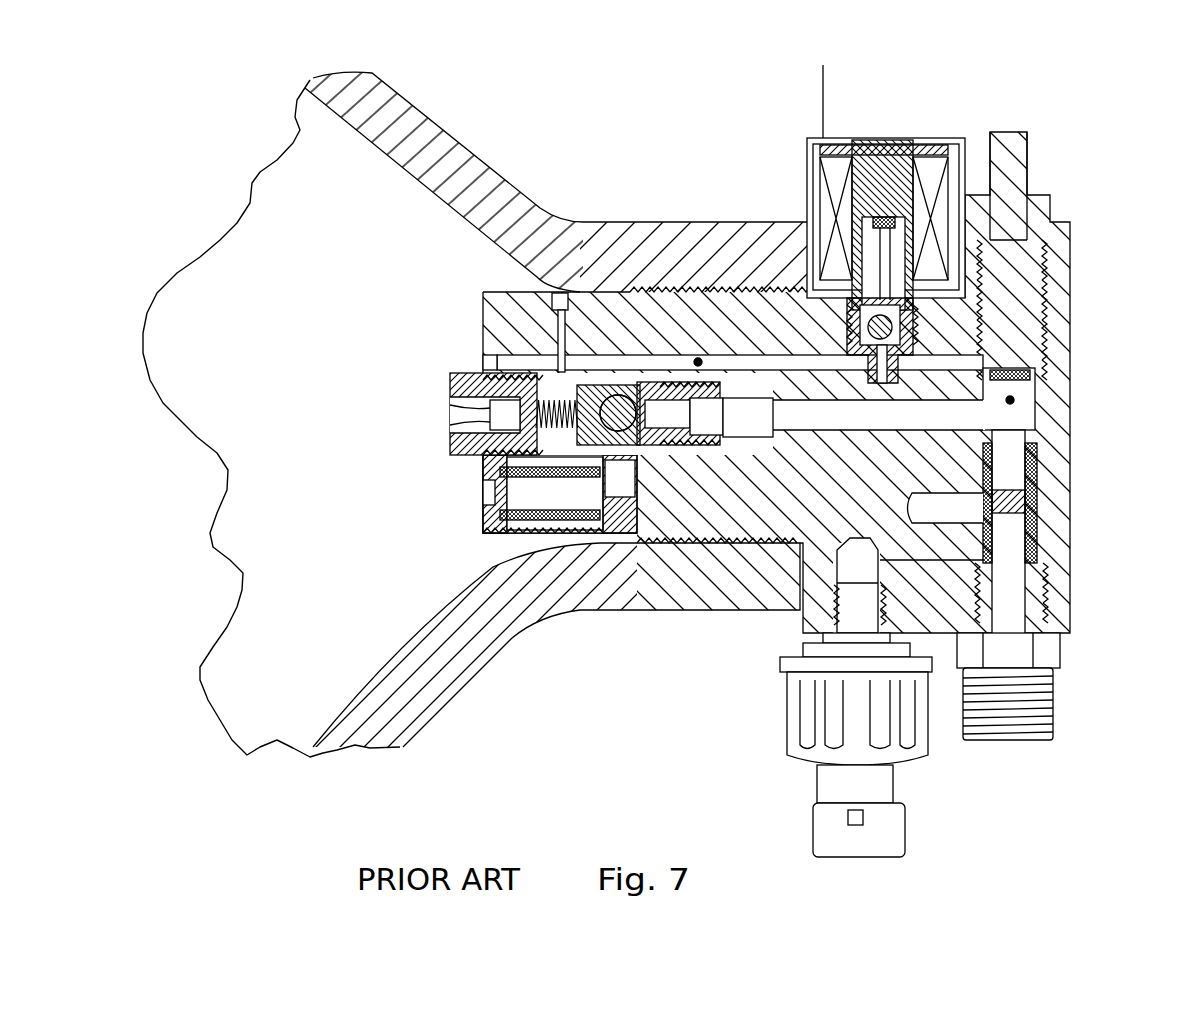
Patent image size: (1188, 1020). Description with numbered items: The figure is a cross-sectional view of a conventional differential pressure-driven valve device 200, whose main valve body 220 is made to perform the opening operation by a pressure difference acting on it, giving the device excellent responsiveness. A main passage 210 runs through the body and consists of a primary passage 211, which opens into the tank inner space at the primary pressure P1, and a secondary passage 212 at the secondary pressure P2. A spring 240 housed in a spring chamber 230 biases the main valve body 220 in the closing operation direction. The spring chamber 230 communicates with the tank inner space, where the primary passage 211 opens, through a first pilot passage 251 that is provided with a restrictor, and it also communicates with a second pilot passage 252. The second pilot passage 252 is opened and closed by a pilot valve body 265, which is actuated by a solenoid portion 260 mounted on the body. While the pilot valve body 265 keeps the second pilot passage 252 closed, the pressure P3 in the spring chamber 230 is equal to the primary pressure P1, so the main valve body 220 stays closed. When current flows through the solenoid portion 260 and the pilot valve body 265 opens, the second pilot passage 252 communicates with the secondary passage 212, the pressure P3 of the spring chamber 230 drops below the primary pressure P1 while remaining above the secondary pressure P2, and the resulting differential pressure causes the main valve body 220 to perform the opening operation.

The valve device 200 is at (643, 456).
The main passage 210 is at (687, 431).
The primary passage 211 is at (624, 487).
The secondary passage 212 is at (687, 409).
The main valve body 220 is at (560, 352).
The spring chamber 230 is at (530, 438).
The spring 240 is at (520, 389).
The first pilot passage 251 is at (503, 415).
The second pilot passage 252 is at (612, 363).
The solenoid portion 260 is at (901, 131).
The pilot valve body 265 is at (888, 326).
The primary pressure P1 is at (232, 363).
The secondary pressure P2 is at (1012, 400).
The pressure of the spring chamber P3 is at (698, 360).